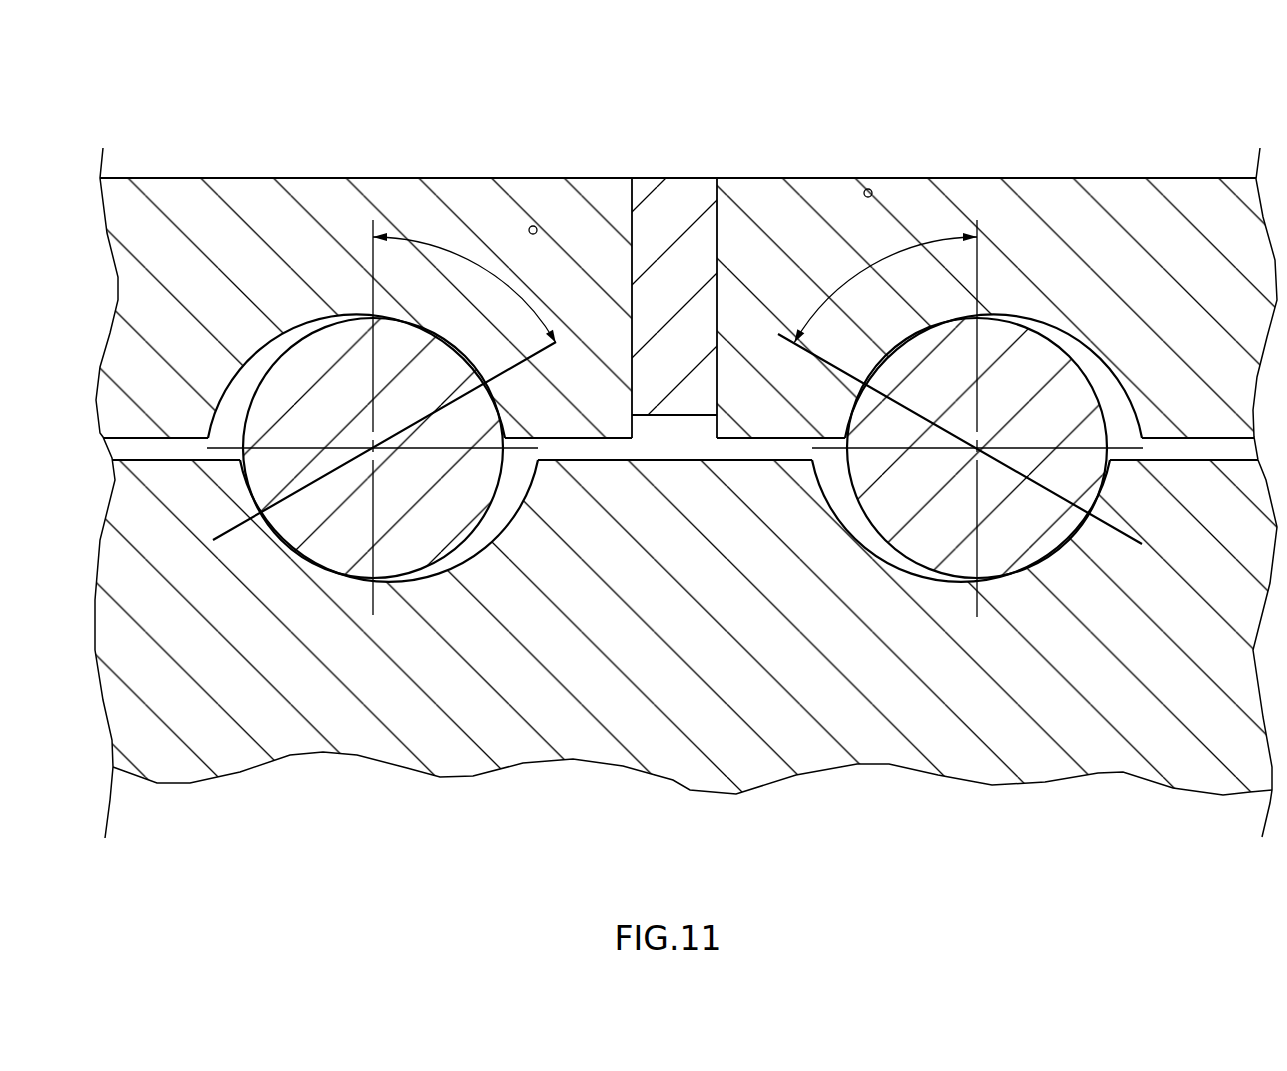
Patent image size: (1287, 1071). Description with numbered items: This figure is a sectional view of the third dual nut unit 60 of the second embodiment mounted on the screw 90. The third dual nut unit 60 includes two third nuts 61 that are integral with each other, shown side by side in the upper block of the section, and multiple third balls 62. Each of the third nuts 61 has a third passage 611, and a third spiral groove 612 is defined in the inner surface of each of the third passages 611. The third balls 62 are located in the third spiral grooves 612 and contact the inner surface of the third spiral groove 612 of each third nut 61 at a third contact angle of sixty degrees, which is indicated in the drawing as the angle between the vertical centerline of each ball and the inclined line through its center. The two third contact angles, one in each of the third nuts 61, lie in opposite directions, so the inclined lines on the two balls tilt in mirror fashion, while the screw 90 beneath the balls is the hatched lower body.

The third dual nut unit 60 is at (686, 433).
The third nut 61 is at (206, 208).
The third passage 611 is at (133, 450).
The third spiral groove 612 is at (251, 378).
The third ball 62 is at (425, 508).
The screw 90 is at (218, 752).